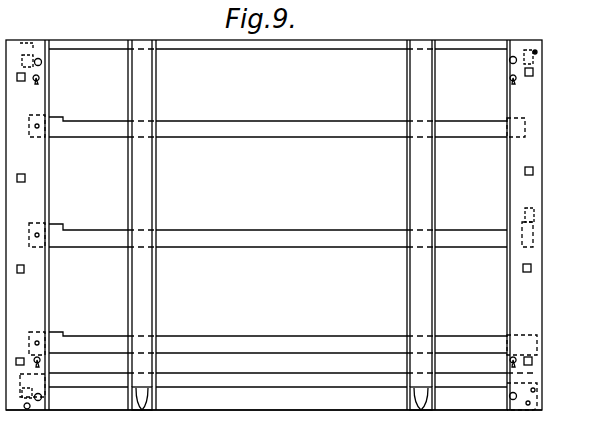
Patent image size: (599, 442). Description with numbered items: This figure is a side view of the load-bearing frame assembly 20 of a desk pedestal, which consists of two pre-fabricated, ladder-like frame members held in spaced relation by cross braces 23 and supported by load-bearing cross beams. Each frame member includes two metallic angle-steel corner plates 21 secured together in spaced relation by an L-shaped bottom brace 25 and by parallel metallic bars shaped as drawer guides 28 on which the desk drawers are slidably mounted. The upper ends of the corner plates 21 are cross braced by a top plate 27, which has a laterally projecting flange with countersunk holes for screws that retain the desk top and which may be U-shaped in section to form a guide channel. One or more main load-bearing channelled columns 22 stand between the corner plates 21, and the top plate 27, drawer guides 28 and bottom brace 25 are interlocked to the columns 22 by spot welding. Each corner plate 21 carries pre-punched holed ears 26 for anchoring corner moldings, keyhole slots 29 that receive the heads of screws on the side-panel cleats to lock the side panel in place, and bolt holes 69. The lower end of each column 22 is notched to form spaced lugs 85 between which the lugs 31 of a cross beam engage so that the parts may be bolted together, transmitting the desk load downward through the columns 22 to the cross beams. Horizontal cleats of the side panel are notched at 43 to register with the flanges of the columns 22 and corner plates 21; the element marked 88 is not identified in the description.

The load-bearing frame assembly 20 is at (160, 99).
The corner plate 21 is at (30, 286).
The channelled column 22 is at (148, 196).
The cross brace 23 is at (36, 70).
The L-shaped bottom brace 25 is at (288, 380).
The holed ear 26 is at (19, 358).
The top plate 27 is at (337, 41).
The drawer guide 28 is at (315, 125).
The keyhole slot 29 is at (39, 81).
The lug 31 is at (420, 425).
The notch 43 is at (274, 426).
The bolt hole 69 is at (510, 60).
The lug 85 is at (128, 399).
The catch 88 is at (535, 50).